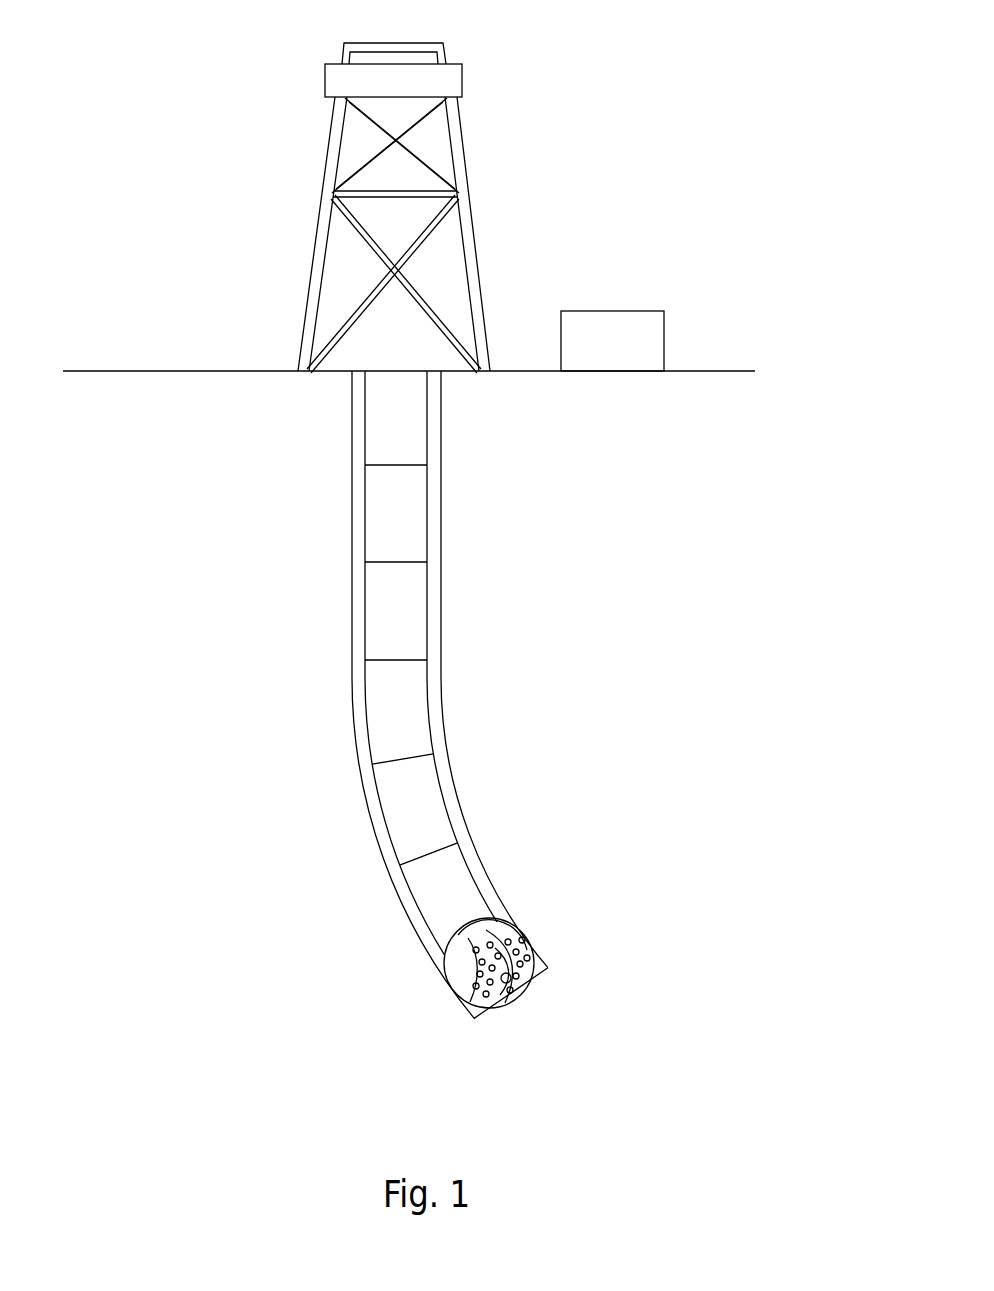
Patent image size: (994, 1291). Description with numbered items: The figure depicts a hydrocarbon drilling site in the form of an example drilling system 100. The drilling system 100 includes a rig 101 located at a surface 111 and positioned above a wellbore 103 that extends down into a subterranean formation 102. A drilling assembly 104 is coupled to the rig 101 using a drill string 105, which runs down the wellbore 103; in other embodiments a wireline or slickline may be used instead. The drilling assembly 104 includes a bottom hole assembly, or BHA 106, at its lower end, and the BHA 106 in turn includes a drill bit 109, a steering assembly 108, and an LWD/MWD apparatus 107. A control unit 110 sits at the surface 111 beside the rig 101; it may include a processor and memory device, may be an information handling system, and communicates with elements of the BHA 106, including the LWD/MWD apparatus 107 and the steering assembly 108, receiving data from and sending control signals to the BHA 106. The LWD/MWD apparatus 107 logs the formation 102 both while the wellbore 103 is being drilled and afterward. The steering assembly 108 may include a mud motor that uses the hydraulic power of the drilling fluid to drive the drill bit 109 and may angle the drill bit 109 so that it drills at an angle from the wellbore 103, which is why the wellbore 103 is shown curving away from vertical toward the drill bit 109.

The drilling system 100 is at (611, 128).
The rig 101 is at (462, 77).
The subterranean formation 102 is at (631, 543).
The wellbore 103 is at (352, 515).
The drilling assembly 104 is at (352, 607).
The drill string 105 is at (429, 585).
The bottom hole assembly (BHA) 106 is at (403, 908).
The LWD/MWD apparatus 107 is at (447, 798).
The steering assembly 108 is at (497, 892).
The drill bit 109 is at (546, 968).
The control unit 110 is at (632, 352).
The surface 111 is at (713, 370).